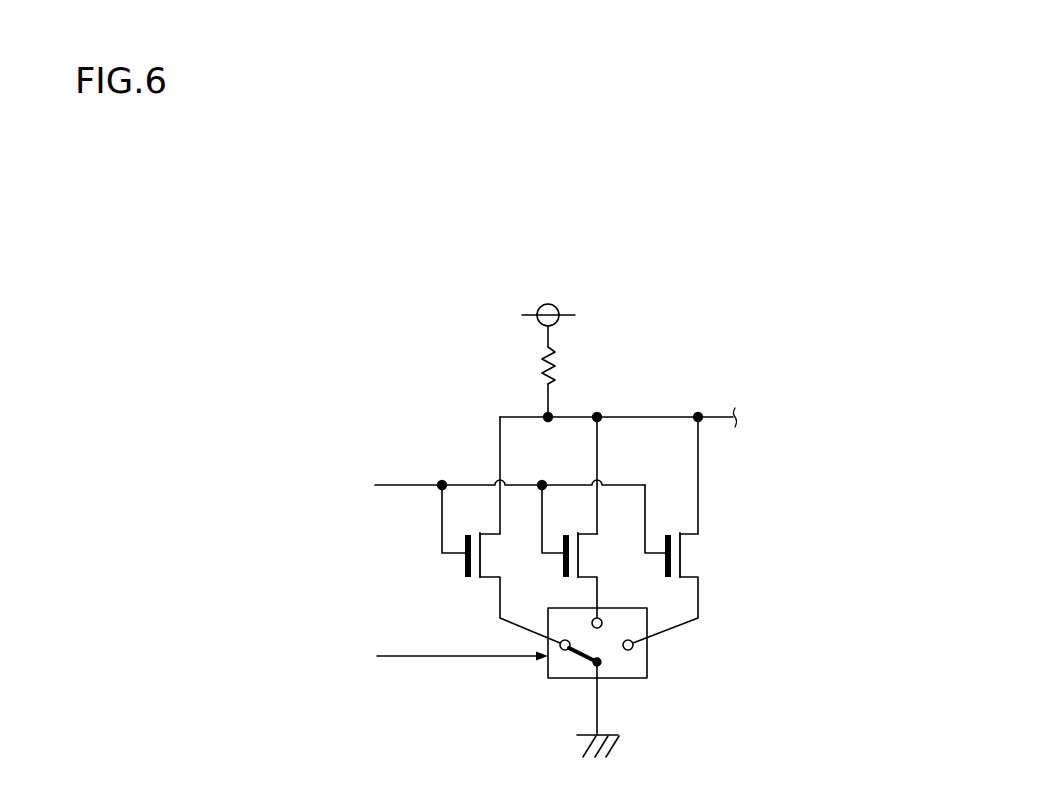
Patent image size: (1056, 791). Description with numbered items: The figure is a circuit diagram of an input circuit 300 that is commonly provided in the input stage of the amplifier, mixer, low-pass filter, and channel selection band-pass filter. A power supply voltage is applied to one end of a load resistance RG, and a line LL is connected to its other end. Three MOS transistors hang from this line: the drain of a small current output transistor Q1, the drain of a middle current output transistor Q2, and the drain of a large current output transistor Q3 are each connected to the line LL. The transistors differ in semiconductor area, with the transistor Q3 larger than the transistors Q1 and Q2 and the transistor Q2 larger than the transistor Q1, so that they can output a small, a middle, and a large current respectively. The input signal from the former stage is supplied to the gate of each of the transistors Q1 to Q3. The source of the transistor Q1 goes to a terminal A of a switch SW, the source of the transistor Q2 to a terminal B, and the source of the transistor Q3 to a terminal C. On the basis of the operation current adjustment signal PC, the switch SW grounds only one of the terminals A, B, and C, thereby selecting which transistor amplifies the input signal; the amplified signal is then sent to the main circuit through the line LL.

The input circuit 300 is at (324, 283).
The load resistance RG is at (553, 370).
The line LL is at (650, 417).
The small current output transistor Q1 is at (481, 553).
The middle current output transistor Q2 is at (579, 553).
The large current output transistor Q3 is at (681, 553).
The switch SW is at (633, 643).
The operation current adjustment signal PC is at (445, 655).
The terminal A is at (563, 635).
The terminal B is at (590, 626).
The terminal C is at (628, 635).